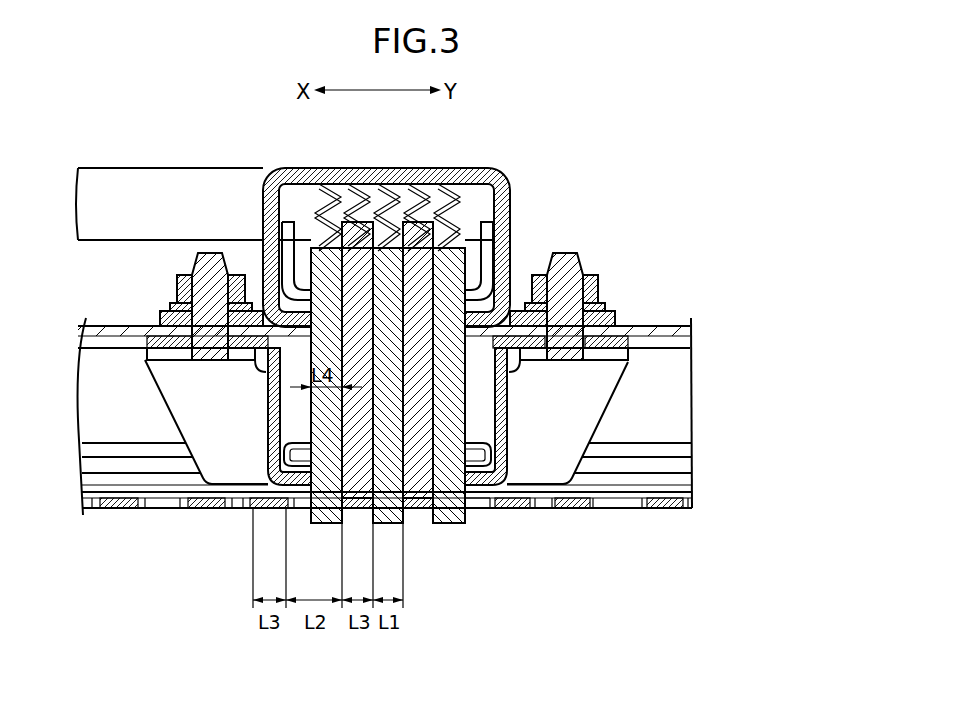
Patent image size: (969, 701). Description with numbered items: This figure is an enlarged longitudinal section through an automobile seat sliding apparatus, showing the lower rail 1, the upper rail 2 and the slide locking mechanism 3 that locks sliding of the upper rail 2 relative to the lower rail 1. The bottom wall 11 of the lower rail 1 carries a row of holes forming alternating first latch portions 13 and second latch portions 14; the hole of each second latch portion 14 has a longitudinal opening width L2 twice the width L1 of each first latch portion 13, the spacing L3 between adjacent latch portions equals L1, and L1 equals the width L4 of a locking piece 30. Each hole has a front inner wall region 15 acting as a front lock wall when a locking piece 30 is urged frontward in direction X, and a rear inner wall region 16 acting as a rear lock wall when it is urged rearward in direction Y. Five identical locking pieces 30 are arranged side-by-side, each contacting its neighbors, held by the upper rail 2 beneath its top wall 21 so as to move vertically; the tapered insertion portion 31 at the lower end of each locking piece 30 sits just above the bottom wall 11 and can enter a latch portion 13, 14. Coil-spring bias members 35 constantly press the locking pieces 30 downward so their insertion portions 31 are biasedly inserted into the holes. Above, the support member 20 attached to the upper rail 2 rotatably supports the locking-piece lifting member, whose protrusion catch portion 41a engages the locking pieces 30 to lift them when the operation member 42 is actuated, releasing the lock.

The lower rail 1 is at (675, 514).
The upper rail 2 is at (683, 388).
The slide locking mechanism 3 is at (566, 230).
The bottom wall 11 is at (657, 506).
The first latch portion 13 is at (238, 508).
The second latch portion 14 is at (305, 505).
The front inner wall region 15 is at (266, 482).
The rear inner wall region 16 is at (176, 508).
The support member 20 is at (473, 168).
The top wall 21 is at (683, 415).
The locking piece 30 is at (330, 312).
The insertion portion 31 is at (498, 500).
The bias member 35 is at (333, 182).
The protrusion catch portion 41a is at (303, 283).
The operation member 42 is at (132, 182).